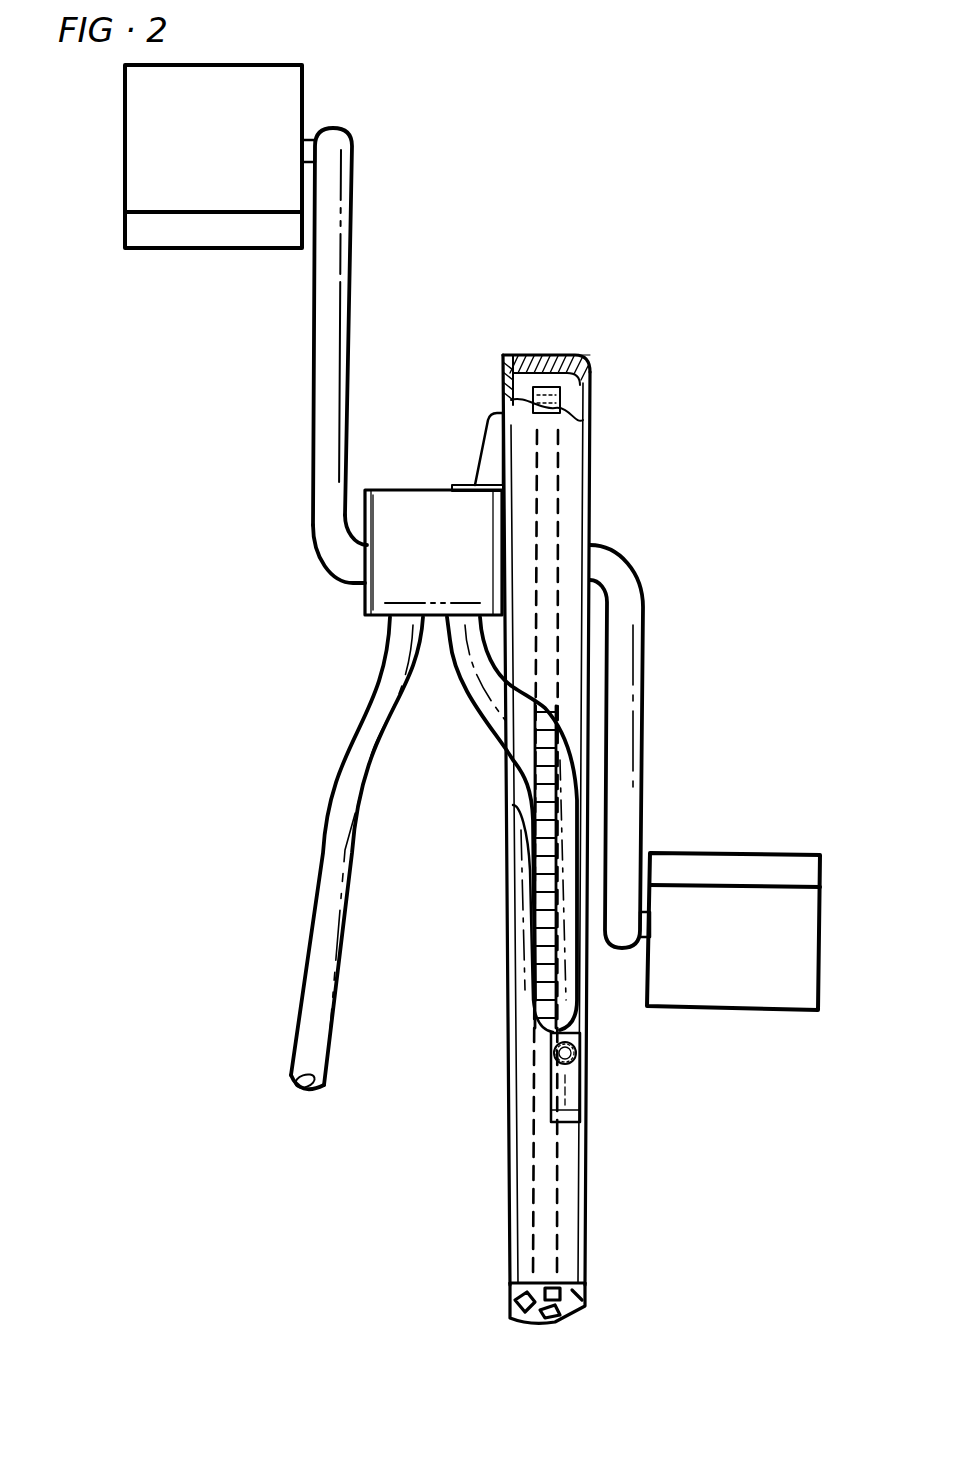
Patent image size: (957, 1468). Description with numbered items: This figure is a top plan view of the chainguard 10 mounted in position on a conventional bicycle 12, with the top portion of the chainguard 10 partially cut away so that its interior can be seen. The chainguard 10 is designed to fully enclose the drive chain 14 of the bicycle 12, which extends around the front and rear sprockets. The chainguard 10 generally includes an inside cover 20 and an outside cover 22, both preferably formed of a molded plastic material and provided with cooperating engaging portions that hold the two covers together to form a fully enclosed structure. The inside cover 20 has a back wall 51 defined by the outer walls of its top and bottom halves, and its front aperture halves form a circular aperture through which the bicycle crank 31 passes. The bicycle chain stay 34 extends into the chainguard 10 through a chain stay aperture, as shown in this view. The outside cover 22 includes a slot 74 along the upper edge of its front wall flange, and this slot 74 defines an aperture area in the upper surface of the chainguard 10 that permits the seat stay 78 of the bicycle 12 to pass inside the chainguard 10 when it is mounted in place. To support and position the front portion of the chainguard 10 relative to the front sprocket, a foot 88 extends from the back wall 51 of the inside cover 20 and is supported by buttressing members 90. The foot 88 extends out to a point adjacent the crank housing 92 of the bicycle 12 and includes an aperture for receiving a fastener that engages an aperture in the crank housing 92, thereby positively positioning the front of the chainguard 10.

The chainguard 10 is at (551, 350).
The bicycle 12 is at (320, 852).
The drive chain 14 is at (533, 930).
The inside cover 20 is at (498, 376).
The outside cover 22 is at (596, 485).
The bicycle crank 31 is at (645, 672).
The bicycle chain stay 34 is at (487, 732).
The back wall 51 is at (510, 860).
The slot 74 is at (573, 1040).
The seat stay 78 is at (573, 1070).
The foot 88 is at (457, 486).
The buttressing members 90 is at (482, 443).
The crank housing 92 is at (398, 586).